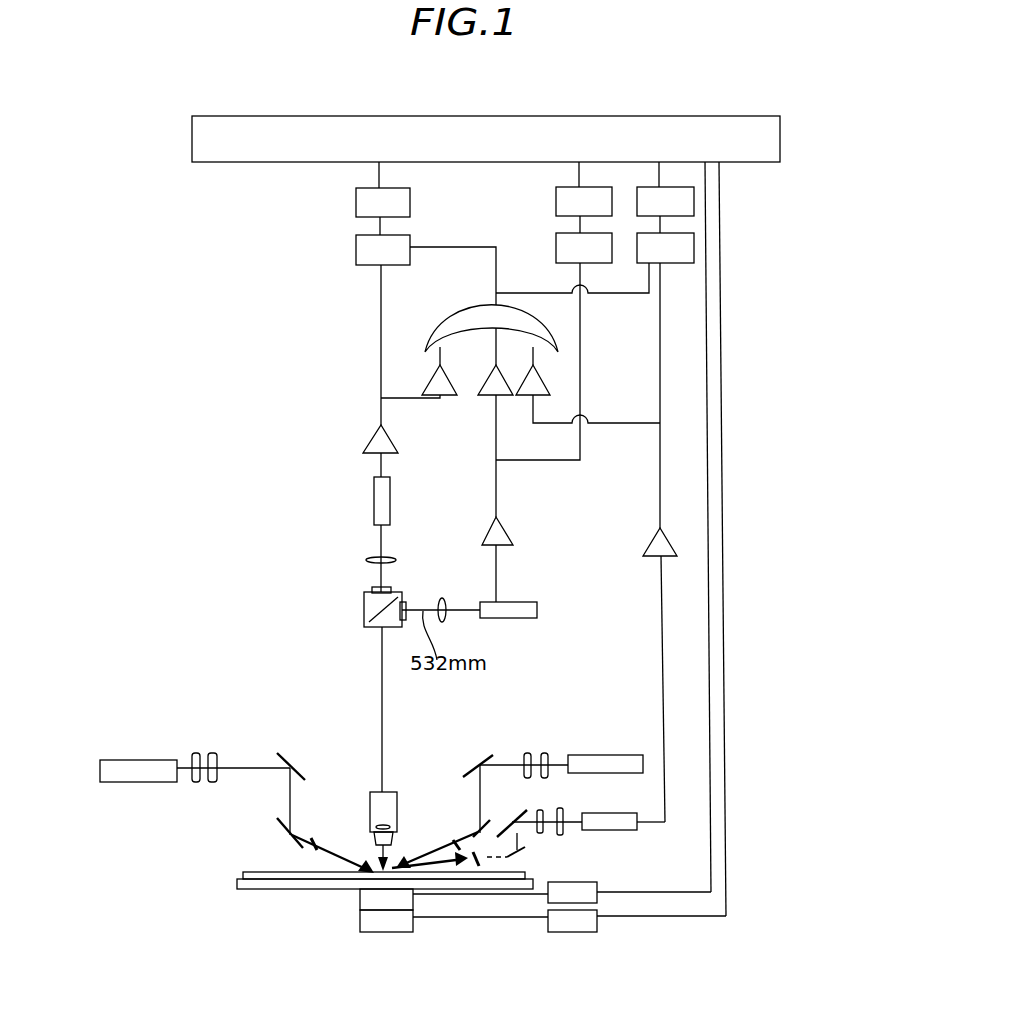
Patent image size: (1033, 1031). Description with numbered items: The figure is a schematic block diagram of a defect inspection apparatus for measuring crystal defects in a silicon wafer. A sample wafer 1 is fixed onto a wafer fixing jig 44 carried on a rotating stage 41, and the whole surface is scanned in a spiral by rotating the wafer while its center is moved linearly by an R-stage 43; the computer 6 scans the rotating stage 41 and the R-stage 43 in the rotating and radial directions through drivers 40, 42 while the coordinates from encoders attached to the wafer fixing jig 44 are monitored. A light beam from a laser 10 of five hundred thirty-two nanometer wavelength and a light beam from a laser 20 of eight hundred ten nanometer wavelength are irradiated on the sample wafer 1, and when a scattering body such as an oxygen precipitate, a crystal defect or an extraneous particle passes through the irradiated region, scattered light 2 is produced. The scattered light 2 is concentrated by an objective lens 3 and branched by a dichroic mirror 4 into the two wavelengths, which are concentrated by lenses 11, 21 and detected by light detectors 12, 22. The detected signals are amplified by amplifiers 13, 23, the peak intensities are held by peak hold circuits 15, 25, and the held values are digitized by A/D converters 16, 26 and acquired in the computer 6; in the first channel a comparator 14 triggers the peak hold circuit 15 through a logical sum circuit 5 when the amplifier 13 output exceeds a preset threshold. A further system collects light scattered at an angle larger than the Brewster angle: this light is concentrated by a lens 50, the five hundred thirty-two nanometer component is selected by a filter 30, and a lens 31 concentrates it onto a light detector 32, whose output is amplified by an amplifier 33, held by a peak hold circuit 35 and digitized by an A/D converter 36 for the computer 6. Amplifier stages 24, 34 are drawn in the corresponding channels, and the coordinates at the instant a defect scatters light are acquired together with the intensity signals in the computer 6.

The sample wafer 1 is at (265, 872).
The scattered light 2 is at (378, 860).
The objective lens 3 is at (372, 792).
The dichroic mirror 4 is at (365, 627).
The logical sum circuit 5 is at (452, 318).
The computer 6 is at (192, 131).
The laser 10 is at (133, 760).
The lens 11 is at (370, 562).
The light detector 12 is at (374, 503).
The amplifier 13 is at (363, 442).
The comparator 14 is at (425, 386).
The peak hold circuit 15 is at (356, 247).
The A/D converter 16 is at (356, 198).
The laser 20 is at (587, 755).
The lens 21 is at (442, 597).
The light detector 22 is at (553, 600).
The amplifier 23 is at (513, 532).
The amplifier 24 is at (496, 398).
The peak hold circuit 25 is at (593, 263).
The A/D converter 26 is at (556, 198).
The filter 30 is at (545, 810).
The lens 31 is at (563, 836).
The light detector 32 is at (637, 826).
The amplifier 33 is at (655, 540).
The amplifier 34 is at (550, 380).
The peak hold circuit 35 is at (694, 250).
The A/D converter 36 is at (694, 200).
The driver 40 is at (620, 887).
The rotating stage 41 is at (357, 905).
The driver 42 is at (562, 932).
The R-stage 43 is at (383, 933).
The wafer fixing jig 44 is at (237, 886).
The lens 50 is at (470, 874).